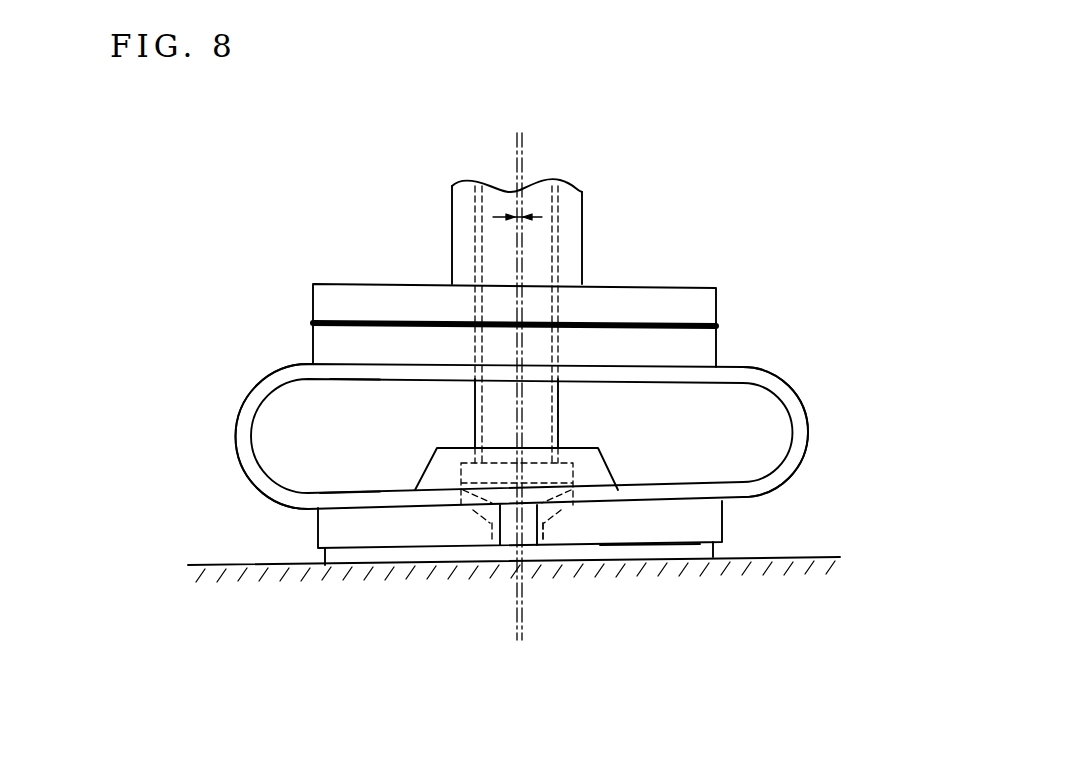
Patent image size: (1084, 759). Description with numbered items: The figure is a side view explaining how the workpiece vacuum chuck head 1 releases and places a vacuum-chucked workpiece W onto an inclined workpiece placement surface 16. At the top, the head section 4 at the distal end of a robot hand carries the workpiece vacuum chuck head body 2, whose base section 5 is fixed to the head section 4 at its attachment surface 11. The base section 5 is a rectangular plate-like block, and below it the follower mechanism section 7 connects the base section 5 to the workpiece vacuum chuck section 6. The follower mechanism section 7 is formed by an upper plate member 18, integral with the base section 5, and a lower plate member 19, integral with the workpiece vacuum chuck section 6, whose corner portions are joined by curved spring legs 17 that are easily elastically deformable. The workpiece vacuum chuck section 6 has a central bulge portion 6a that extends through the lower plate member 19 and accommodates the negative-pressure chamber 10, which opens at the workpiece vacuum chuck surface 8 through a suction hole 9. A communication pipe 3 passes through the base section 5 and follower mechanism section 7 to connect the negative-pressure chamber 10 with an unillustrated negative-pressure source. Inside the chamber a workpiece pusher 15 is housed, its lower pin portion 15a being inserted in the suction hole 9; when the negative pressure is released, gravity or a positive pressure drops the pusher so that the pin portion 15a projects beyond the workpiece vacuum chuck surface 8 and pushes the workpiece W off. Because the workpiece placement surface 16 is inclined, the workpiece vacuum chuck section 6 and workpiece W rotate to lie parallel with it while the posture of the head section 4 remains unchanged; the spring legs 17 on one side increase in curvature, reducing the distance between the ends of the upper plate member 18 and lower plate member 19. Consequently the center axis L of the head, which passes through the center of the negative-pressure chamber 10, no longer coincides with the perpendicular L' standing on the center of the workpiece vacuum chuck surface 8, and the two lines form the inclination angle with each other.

The workpiece vacuum chuck head 1 is at (272, 273).
The workpiece vacuum chuck head body 2 is at (787, 375).
The communication pipe 3 is at (474, 397).
The head section 4 is at (598, 225).
The base section 5 is at (312, 342).
The workpiece vacuum chuck section 6 is at (352, 550).
The bulge portion 6a is at (605, 462).
The follower mechanism section 7 is at (236, 443).
The workpiece vacuum chuck surface 8 is at (405, 553).
The suction hole 9 is at (535, 546).
The negative-pressure chamber 10 is at (530, 463).
The attachment surface 11 is at (676, 323).
The workpiece pusher 15 is at (495, 476).
The pin portion 15a is at (500, 546).
The workpiece placement surface 16 is at (786, 553).
The curved spring legs 17 is at (235, 418).
The upper plate member 18 is at (353, 370).
The lower plate member 19 is at (330, 497).
The center axis L is at (518, 372).
The perpendicular L' is at (479, 386).
The workpiece W is at (622, 547).